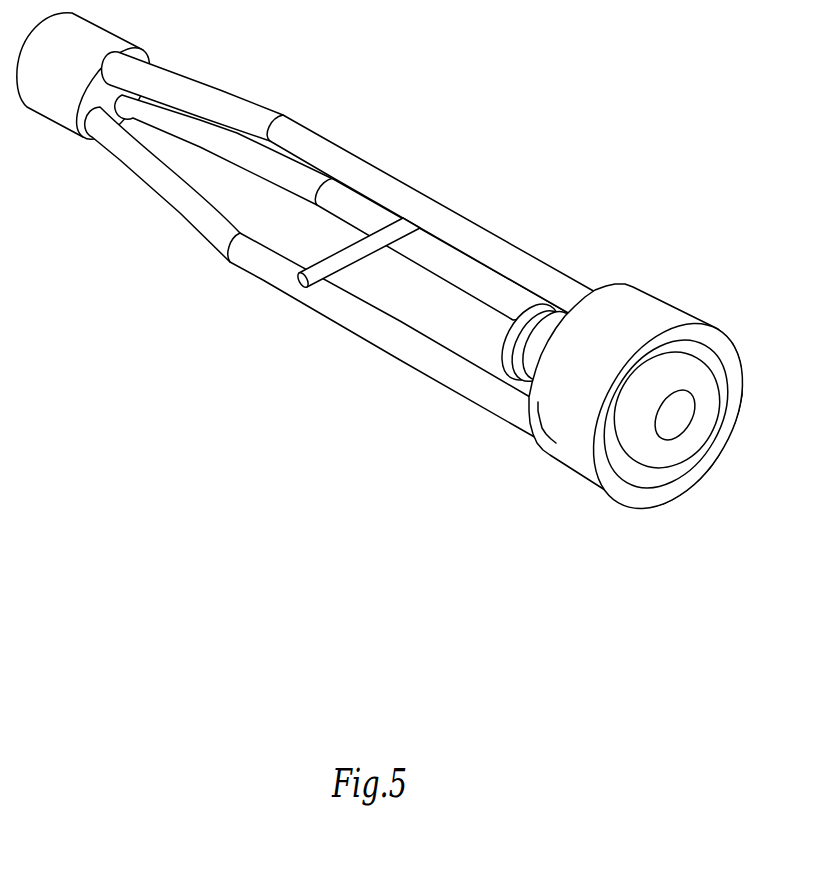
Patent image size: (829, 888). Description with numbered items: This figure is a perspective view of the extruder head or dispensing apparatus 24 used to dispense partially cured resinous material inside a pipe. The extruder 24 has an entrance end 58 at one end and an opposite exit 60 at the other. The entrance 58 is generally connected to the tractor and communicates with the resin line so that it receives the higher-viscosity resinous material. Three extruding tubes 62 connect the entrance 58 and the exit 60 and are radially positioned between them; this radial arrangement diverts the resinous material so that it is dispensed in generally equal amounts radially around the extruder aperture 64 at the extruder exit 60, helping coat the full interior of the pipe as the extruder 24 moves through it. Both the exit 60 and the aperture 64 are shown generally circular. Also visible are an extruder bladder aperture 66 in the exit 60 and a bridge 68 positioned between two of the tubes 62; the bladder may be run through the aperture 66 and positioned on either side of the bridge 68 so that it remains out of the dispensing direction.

The extruder 24 is at (489, 177).
The entrance end 58 is at (110, 36).
The exit 60 is at (583, 470).
The extruding tubes 62 is at (542, 271).
The extruder aperture 64 is at (653, 487).
The extruder bladder aperture 66 is at (673, 438).
The bridge 68 is at (353, 262).